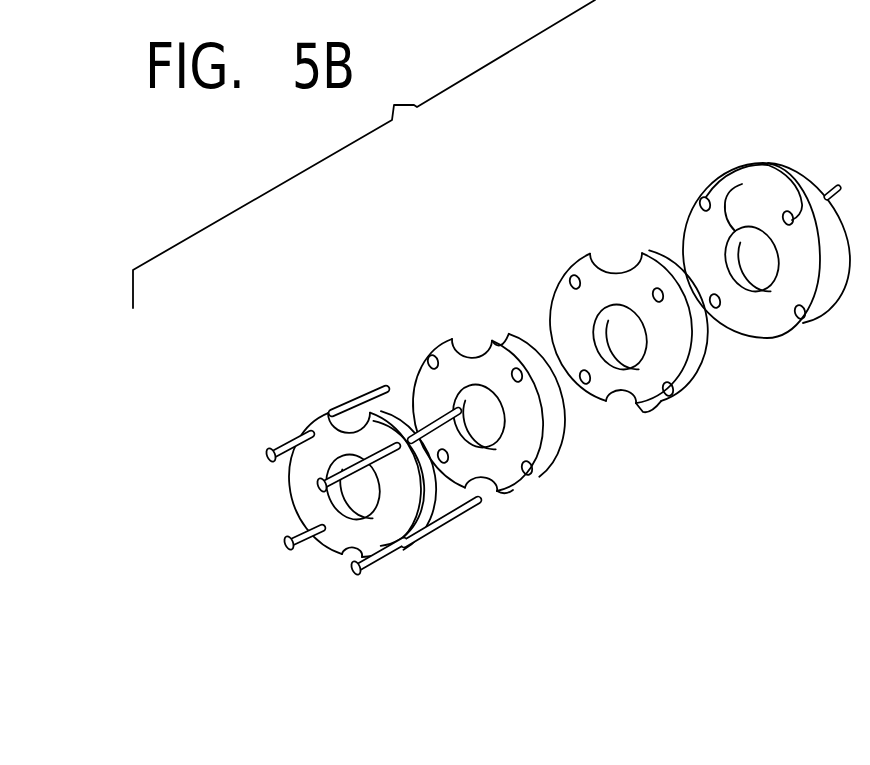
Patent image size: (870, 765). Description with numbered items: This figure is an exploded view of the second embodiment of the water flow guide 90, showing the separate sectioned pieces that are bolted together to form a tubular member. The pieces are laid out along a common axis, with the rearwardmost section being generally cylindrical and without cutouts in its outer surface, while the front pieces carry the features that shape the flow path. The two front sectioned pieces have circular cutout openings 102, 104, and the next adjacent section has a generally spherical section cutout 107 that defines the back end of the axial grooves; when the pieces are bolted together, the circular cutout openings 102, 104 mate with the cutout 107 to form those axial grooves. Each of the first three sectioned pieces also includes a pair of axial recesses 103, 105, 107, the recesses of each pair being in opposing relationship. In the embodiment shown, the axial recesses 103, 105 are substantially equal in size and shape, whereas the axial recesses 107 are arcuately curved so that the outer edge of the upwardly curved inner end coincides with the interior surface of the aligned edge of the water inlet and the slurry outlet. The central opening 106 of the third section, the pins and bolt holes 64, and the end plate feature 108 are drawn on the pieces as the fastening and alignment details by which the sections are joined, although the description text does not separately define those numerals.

The water flow guide 90 is at (490, 228).
The circular cutout opening 102 is at (340, 495).
The axial recesses 103 is at (334, 402).
The circular cutout opening 104 is at (422, 382).
The axial recesses 105 is at (471, 345).
The third ring 106 is at (600, 318).
The spherical section cutout 107 is at (622, 256).
The end plate 108 is at (742, 184).
The holes 64 is at (700, 196).